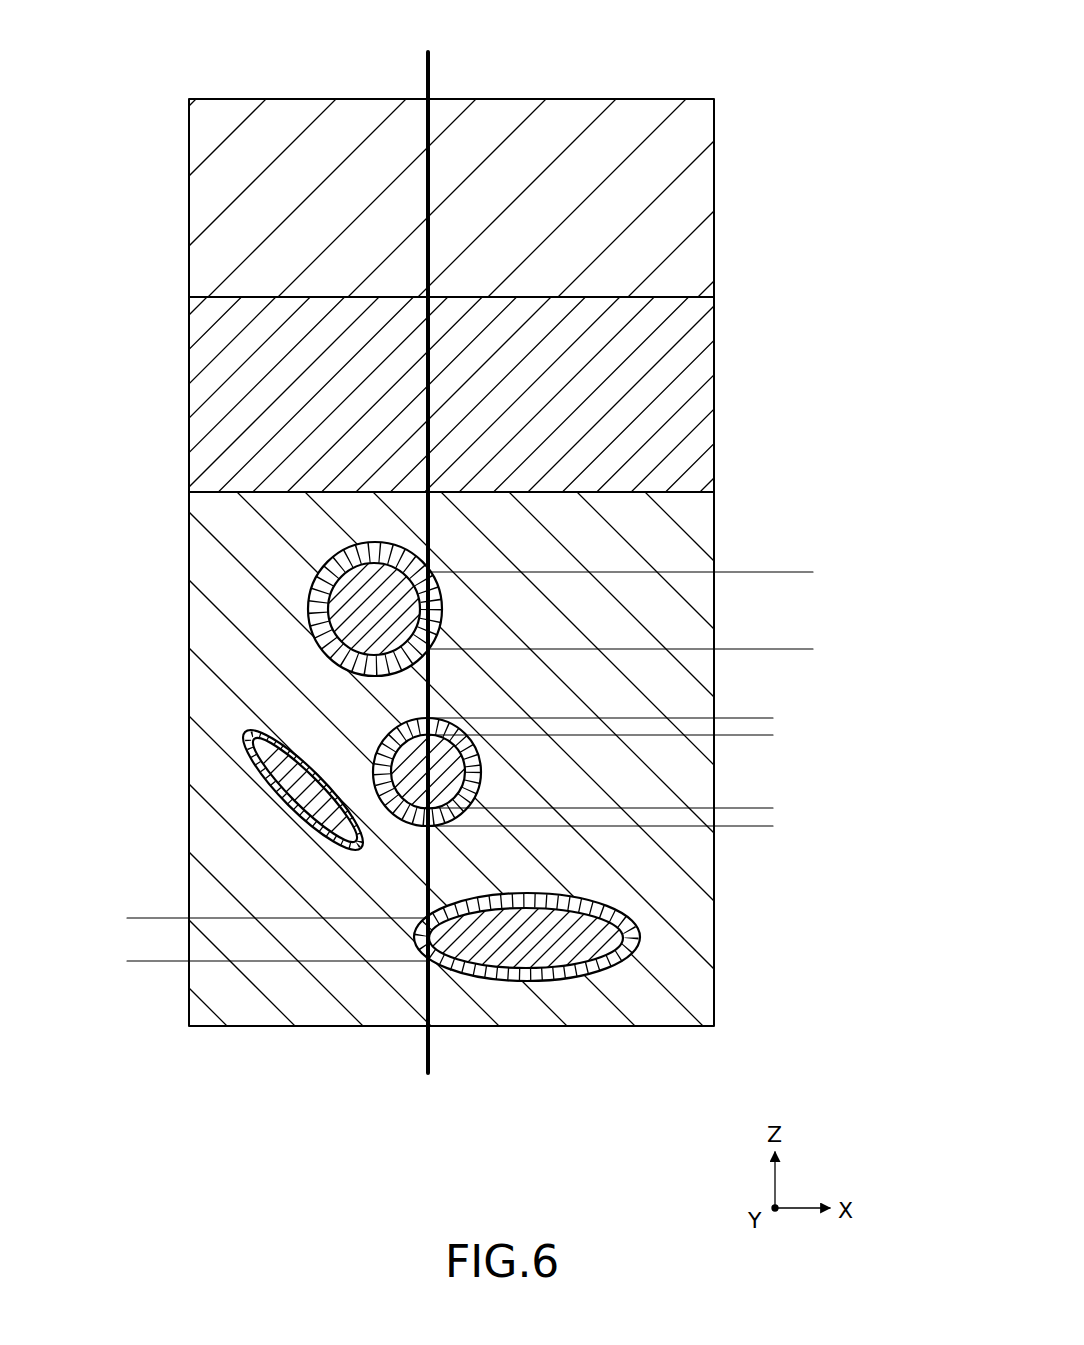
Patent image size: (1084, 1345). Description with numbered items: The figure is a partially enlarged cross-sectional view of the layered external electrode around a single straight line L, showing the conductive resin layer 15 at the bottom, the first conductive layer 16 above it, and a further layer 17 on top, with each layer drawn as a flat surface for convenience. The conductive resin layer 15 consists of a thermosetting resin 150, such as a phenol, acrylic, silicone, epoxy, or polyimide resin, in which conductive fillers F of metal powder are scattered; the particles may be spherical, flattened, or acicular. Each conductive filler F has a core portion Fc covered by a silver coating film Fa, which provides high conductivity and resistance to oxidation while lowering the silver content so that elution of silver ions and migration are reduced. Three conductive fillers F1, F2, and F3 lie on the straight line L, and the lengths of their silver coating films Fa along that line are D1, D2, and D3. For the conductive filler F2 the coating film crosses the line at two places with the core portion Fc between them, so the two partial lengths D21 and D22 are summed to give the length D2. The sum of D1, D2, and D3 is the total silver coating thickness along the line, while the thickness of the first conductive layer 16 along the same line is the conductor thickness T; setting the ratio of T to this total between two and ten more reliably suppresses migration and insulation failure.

The thermosetting resin 150 is at (180, 535).
The upper layer 17 is at (726, 99).
The first conductive layer 16 is at (726, 297).
The conductive resin layer 15 is at (726, 492).
The conductor thickness T is at (786, 299).
The straight line L is at (436, 541).
The conductive filler F is at (238, 750).
The conductive filler F1 is at (264, 609).
The Ag coating film Fa is at (318, 600).
The core portion Fc is at (334, 620).
The conductive filler F2 is at (360, 729).
The conductive filler F3 is at (604, 982).
The length D1 is at (787, 574).
The length D2 is at (827, 708).
The length D21 is at (754, 703).
The length D22 is at (754, 793).
The length D3 is at (142, 920).